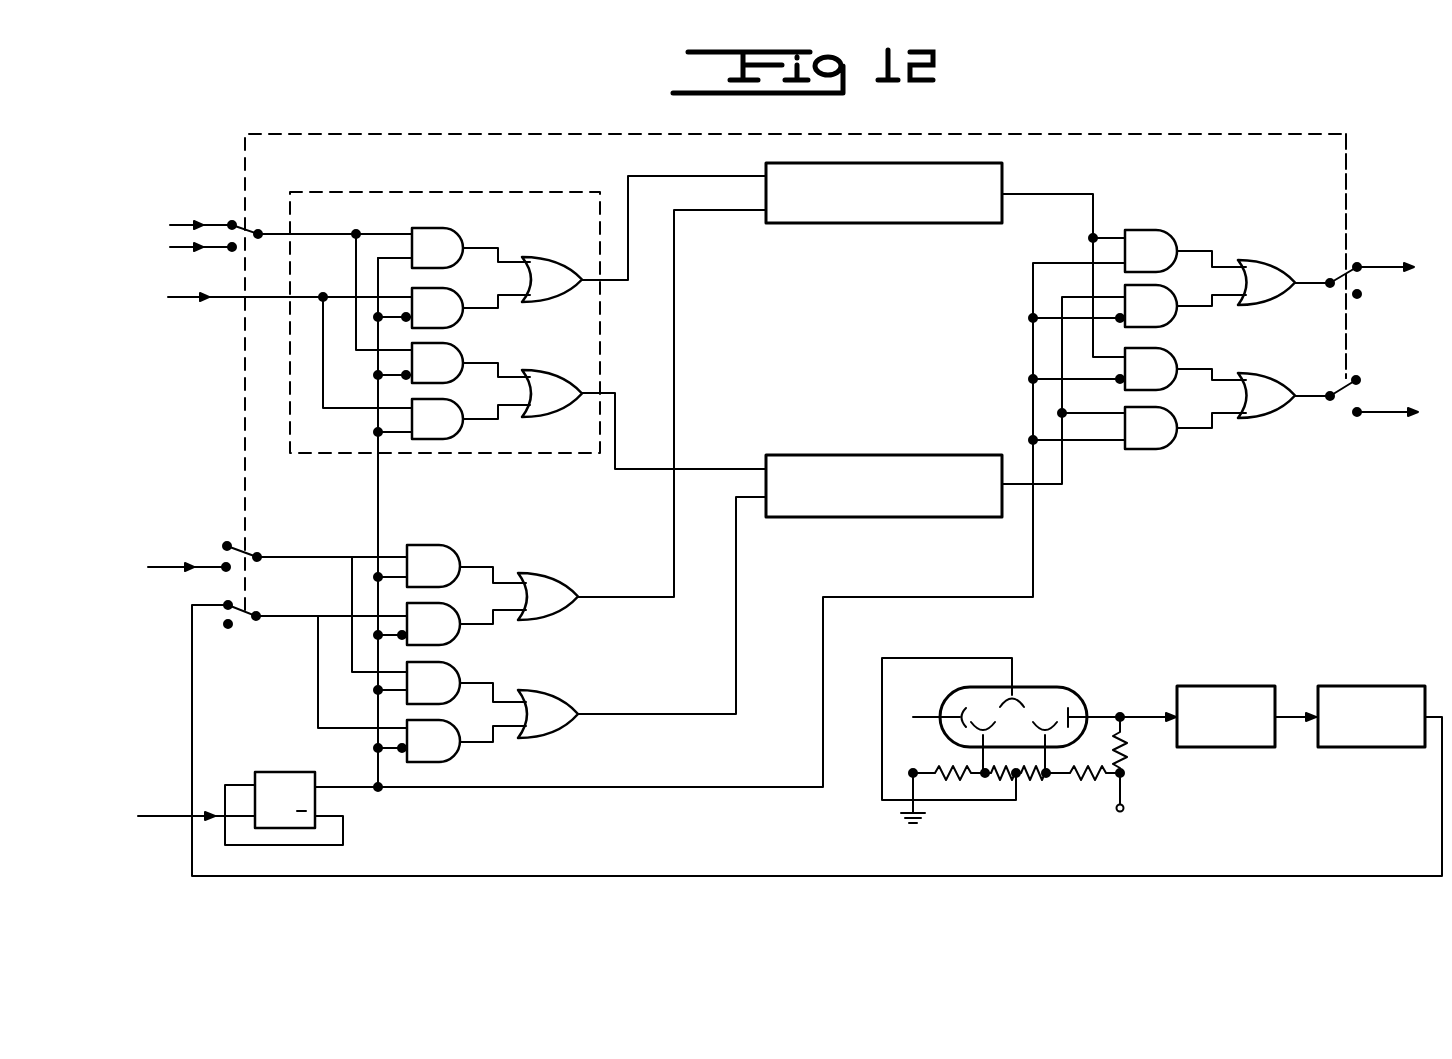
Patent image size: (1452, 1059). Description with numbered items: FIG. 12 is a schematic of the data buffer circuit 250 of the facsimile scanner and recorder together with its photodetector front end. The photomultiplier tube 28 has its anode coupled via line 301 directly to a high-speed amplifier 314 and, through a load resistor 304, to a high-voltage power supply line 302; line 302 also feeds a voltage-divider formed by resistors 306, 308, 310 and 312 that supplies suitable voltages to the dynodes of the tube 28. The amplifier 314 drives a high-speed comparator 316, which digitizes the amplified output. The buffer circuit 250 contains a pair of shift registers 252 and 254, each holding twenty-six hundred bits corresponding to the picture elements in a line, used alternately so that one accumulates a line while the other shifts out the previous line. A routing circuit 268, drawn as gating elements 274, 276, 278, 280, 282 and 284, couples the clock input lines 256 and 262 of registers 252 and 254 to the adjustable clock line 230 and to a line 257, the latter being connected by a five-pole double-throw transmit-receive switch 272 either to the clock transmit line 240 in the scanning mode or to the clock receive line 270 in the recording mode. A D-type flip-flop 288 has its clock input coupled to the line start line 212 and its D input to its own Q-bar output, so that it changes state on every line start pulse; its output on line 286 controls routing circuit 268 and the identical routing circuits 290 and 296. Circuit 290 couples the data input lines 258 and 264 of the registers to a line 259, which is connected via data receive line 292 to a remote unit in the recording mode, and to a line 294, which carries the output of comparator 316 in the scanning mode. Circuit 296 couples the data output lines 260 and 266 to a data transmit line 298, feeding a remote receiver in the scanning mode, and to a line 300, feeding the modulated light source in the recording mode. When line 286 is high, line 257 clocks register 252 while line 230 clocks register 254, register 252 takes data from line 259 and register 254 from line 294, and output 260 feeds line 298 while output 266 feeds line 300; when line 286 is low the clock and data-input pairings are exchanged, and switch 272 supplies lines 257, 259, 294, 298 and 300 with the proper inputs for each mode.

The photomultiplier tube 28 is at (1055, 688).
The line start line 212 is at (168, 818).
The adjustable clock line 230 is at (190, 298).
The clock transmit line 240 is at (180, 221).
The data buffer circuit 250 is at (1162, 132).
The shift register 252 is at (960, 225).
The shift register 254 is at (920, 518).
The clock input line 256 is at (735, 176).
The line 257 is at (283, 232).
The data input line 258 is at (742, 212).
The line 259 is at (265, 557).
The data output line 260 is at (1052, 192).
The clock input line 262 is at (738, 468).
The data input line 264 is at (747, 498).
The data output line 266 is at (1023, 487).
The routing circuit 268 is at (507, 193).
The clock receive line 270 is at (177, 240).
The five-pole double-throw transmit-receive switch 272 is at (512, 132).
The AND gate 274 is at (452, 228).
The AND gate 276 is at (447, 290).
The AND gate 278 is at (462, 349).
The AND gate 280 is at (462, 435).
The OR gate 282 is at (570, 240).
The OR gate 284 is at (572, 358).
The line 286 is at (353, 787).
The D-type flip-flop 288 is at (292, 747).
The routing circuit 290 is at (522, 553).
The data receive line 292 is at (150, 560).
The line 294 is at (285, 622).
The routing circuit 296 is at (1208, 232).
The data transmit line 298 is at (1378, 272).
The line 300 is at (1367, 412).
The line 301 is at (1150, 717).
The high-voltage power supply line 302 is at (1127, 806).
The load resistor 304 is at (1123, 753).
The resistor 306 is at (1090, 778).
The resistor 308 is at (1035, 780).
The resistor 310 is at (1000, 778).
The resistor 312 is at (955, 778).
The high-speed amplifier 314 is at (1252, 686).
The high-speed comparator 316 is at (1373, 747).